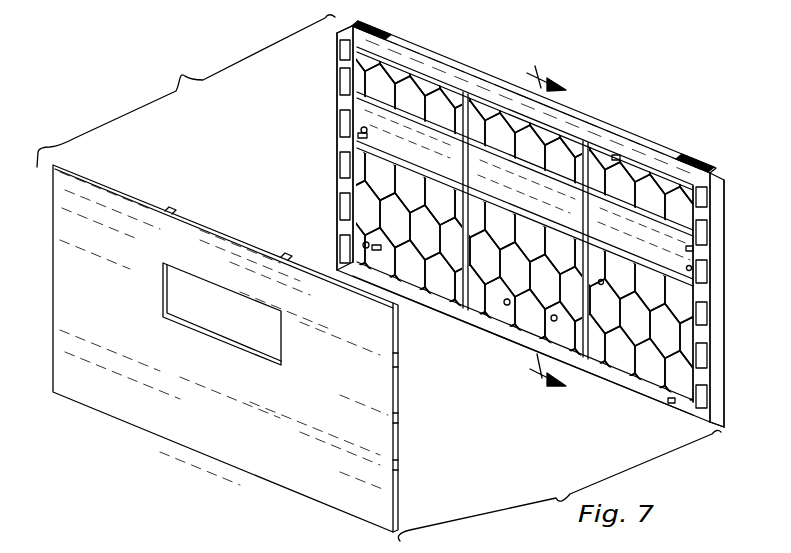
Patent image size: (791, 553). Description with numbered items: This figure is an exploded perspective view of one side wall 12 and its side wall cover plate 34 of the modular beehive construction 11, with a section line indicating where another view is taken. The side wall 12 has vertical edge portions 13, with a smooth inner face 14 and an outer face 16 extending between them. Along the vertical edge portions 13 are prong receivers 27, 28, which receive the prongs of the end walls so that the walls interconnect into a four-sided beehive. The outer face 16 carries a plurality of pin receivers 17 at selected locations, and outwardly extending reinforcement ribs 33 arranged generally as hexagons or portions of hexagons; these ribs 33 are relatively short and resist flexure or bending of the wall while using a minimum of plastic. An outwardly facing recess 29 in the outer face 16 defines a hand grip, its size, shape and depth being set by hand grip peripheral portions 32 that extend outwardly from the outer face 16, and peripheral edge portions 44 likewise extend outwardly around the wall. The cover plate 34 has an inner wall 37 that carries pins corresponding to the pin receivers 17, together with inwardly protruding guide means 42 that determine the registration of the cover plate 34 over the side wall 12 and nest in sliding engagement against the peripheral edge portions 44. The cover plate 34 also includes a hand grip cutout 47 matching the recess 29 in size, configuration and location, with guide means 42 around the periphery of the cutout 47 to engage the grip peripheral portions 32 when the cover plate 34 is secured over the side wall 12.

The modular beehive construction 11 is at (558, 234).
The side wall 12 is at (449, 60).
The vertical edge portions 13 is at (326, 74).
The inner face 14 is at (648, 147).
The outer face 16 is at (668, 238).
The pin receivers 17 is at (363, 130).
The prong receiver 27 is at (338, 41).
The prong receiver 28 is at (338, 118).
The recess 29 is at (490, 167).
The hand grip peripheral portions 32 is at (540, 213).
The reinforcement ribs 33 is at (370, 195).
The side wall cover plate 34 is at (110, 430).
The inner wall 37 is at (135, 188).
The guide means 42 is at (203, 220).
The peripheral edge portions 44 is at (362, 128).
The hand grip cutout 47 is at (275, 338).